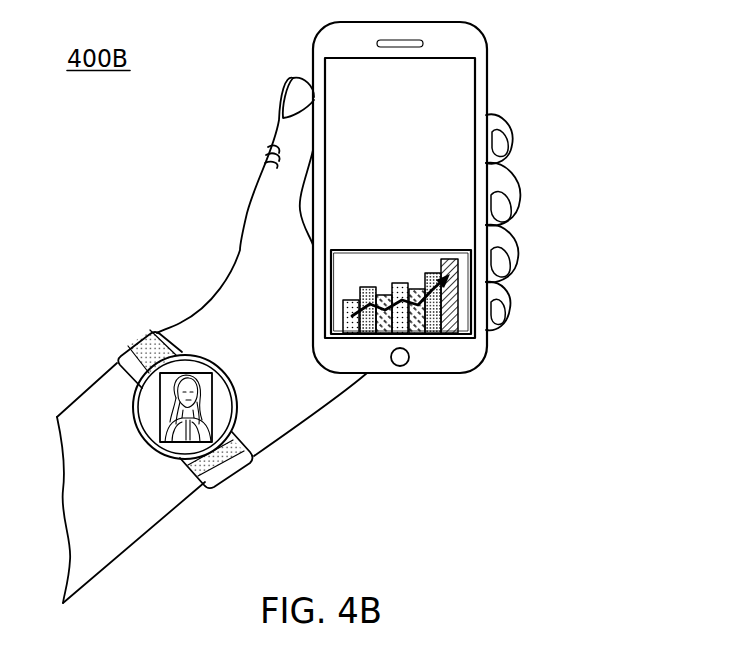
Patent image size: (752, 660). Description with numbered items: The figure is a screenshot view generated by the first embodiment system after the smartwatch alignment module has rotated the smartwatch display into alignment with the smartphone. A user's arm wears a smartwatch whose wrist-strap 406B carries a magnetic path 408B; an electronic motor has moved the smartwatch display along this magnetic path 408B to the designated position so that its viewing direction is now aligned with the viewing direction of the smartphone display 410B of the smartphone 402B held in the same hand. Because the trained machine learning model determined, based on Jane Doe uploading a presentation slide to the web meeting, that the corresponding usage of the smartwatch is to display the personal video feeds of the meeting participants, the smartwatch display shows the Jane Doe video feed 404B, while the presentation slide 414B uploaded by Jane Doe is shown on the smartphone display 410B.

The smartphone 402B is at (485, 45).
The Jane Doe video feed 404B is at (210, 418).
The wrist-strap 406B is at (117, 364).
The magnetic path 408B is at (147, 363).
The smartphone display 410B is at (445, 181).
The presentation slide 414B is at (459, 300).